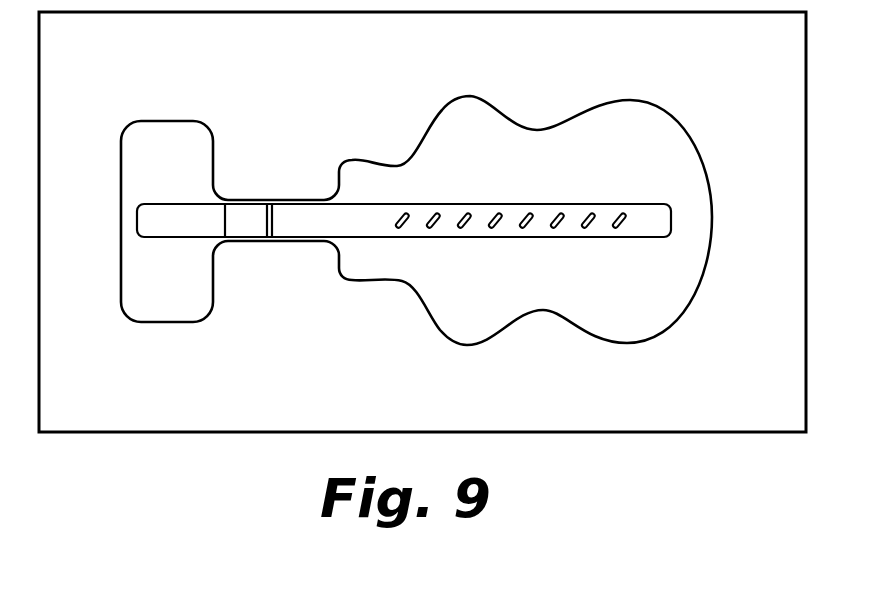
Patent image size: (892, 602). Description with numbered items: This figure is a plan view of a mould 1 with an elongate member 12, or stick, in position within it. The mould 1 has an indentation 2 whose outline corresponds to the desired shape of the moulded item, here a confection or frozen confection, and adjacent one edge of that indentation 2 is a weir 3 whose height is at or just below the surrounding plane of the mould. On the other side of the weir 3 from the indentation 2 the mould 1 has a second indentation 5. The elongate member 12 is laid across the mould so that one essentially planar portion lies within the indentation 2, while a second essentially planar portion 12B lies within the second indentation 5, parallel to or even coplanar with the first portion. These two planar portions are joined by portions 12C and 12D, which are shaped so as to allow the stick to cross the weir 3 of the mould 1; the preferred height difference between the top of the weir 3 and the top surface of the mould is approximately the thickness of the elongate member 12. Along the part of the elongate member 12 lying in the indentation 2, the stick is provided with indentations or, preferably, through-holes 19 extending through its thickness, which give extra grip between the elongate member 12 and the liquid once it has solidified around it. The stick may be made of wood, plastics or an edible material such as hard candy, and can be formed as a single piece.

The mould 1 is at (145, 436).
The indentation 2 is at (648, 131).
The weir 3 is at (305, 243).
The second indentation 5 is at (172, 298).
The elongate member 12 is at (527, 194).
The second essentially planar portion 12B is at (170, 218).
The joining portion 12C is at (250, 225).
The joining portion 12D is at (293, 218).
The through-holes 19 is at (404, 228).